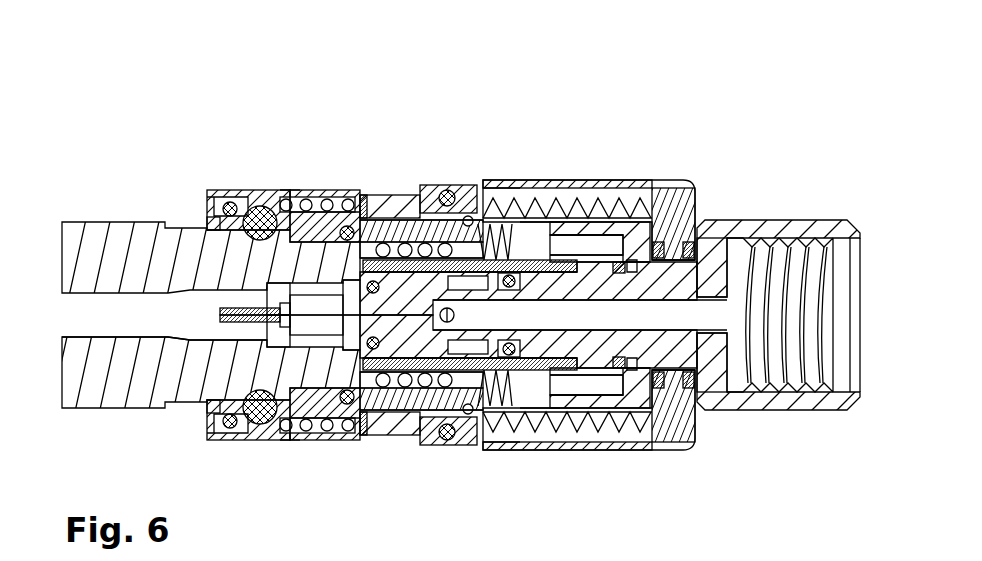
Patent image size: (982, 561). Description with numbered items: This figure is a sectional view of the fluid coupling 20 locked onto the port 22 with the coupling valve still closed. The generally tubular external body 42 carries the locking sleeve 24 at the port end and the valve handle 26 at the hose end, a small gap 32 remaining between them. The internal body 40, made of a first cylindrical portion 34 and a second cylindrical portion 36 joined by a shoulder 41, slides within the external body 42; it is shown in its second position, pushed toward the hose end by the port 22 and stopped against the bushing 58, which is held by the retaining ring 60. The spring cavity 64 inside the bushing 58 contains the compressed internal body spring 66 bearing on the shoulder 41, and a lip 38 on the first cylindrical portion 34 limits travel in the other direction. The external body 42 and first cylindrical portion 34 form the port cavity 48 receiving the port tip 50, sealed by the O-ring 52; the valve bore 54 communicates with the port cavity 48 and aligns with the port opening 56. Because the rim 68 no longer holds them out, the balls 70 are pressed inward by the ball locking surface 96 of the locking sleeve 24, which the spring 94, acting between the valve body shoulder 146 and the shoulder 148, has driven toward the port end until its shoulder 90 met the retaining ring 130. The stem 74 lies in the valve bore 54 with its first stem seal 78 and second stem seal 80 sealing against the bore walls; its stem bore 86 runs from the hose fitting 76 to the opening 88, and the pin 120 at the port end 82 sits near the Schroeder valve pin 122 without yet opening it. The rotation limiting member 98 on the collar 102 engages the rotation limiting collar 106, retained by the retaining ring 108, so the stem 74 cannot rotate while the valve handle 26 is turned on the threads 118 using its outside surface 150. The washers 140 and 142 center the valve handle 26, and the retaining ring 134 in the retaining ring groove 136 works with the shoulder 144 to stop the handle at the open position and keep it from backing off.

The fluid coupling 20 is at (242, 88).
The port 22 is at (98, 221).
The locking sleeve 24 is at (333, 190).
The valve handle 26 is at (594, 180).
The gap 32 is at (401, 194).
The first cylindrical portion 34 is at (352, 352).
The second cylindrical portion 36 is at (520, 366).
The lip 38 is at (378, 376).
The internal body 40 is at (392, 219).
The shoulder 41 is at (415, 376).
The external body 42 is at (386, 200).
The port cavity 48 is at (265, 346).
The port tip 50 is at (318, 338).
The O-ring 52 is at (371, 350).
The valve bore 54 is at (447, 324).
The port opening 56 is at (312, 192).
The bushing 58 is at (548, 236).
The retaining ring 60 is at (490, 224).
The spring cavity 64 is at (432, 390).
The internal body spring 66 is at (405, 388).
The rim 68 is at (293, 189).
The balls 70 is at (243, 234).
The stem 74 is at (575, 376).
The hose fitting 76 is at (797, 228).
The first stem seal 78 is at (362, 195).
The second stem seal 80 is at (540, 218).
The port end of stem 82 is at (180, 268).
The stem bore 86 is at (703, 332).
The opening 88 is at (560, 404).
The shoulder 90 is at (210, 441).
The spring 94 is at (307, 198).
The ball locking surface 96 is at (211, 191).
The rotation limiting member 98 is at (712, 236).
The collar 102 is at (626, 406).
The rotation limiting collar 106 is at (610, 372).
The retaining ring 108 is at (598, 396).
The threads 118 is at (512, 192).
The pin 120 is at (160, 368).
The Schroeder valve pin 122 is at (116, 366).
The retaining ring 130 is at (224, 204).
The retaining ring 134 is at (449, 190).
The retaining ring groove 136 is at (468, 214).
The washer 140 is at (688, 242).
The washer 142 is at (657, 242).
The shoulder 144 is at (440, 186).
The valve body shoulder 146 is at (346, 197).
The shoulder 148 is at (283, 191).
The outside surface 150 is at (688, 424).